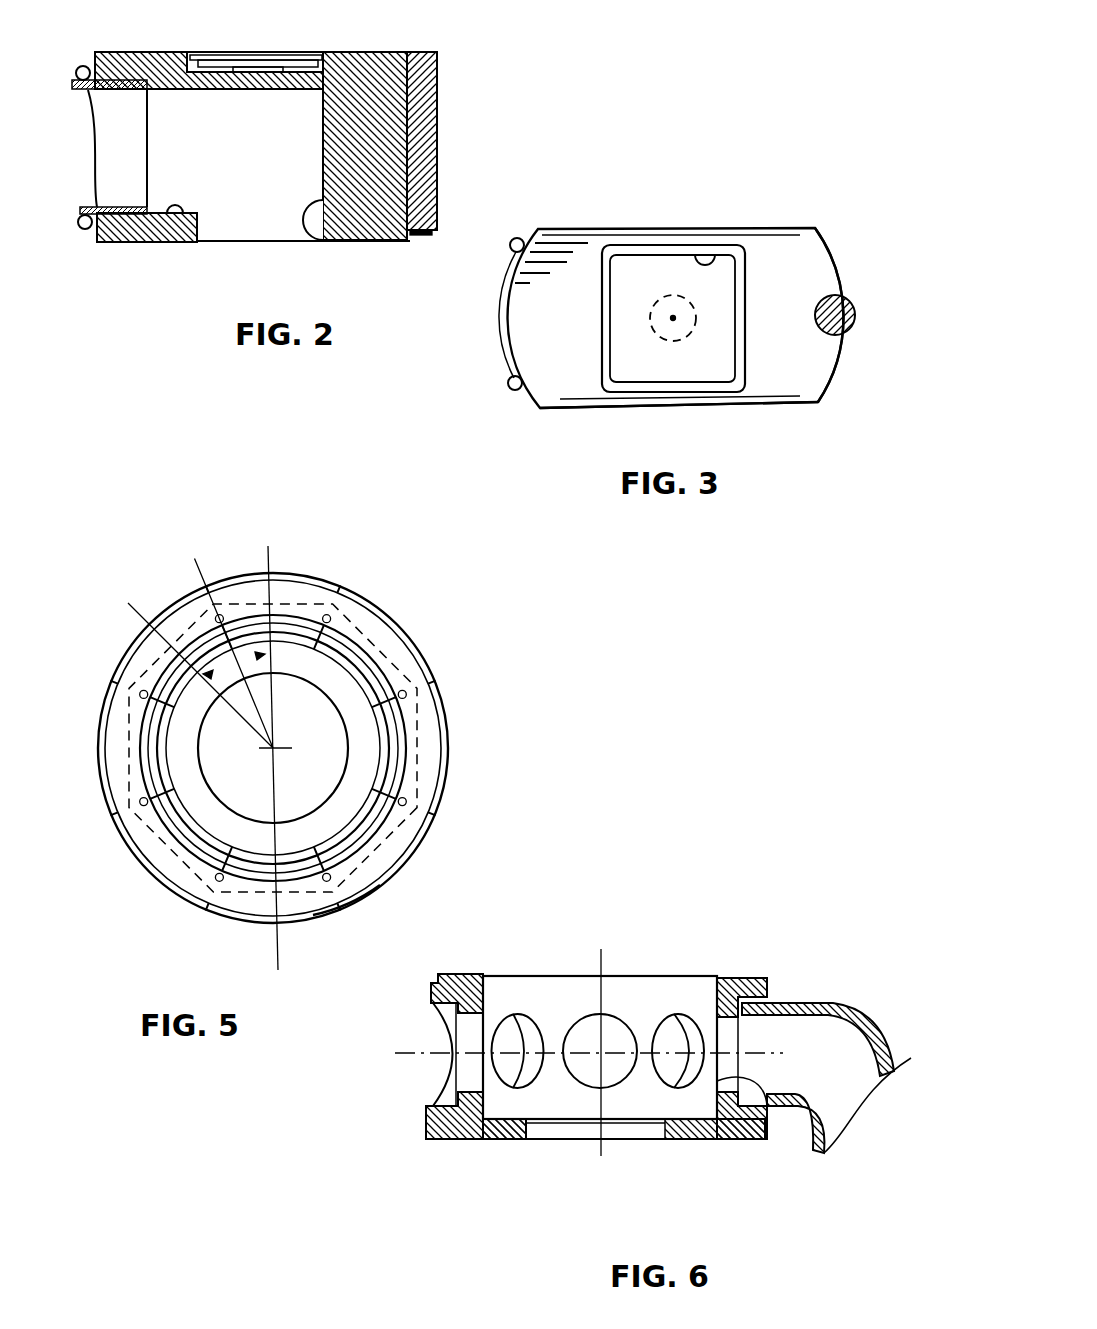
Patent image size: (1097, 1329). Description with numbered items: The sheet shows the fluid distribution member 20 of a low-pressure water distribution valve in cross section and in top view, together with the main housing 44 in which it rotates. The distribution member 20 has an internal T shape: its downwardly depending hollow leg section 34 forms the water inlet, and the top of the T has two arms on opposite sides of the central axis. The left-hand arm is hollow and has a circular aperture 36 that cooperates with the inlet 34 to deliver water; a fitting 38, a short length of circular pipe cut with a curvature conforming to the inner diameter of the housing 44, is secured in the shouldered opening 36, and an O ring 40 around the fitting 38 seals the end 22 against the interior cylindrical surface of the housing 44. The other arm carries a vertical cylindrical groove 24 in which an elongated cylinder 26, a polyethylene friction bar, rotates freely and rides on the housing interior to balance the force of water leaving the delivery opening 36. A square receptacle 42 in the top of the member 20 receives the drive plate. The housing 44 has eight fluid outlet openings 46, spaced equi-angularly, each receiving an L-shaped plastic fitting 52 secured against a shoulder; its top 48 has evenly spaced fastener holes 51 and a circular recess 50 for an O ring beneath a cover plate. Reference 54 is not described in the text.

In FIG. 2, the fluid distribution member 20 is at (352, 52).
In FIG. 3, the fluid distribution member 20 is at (784, 248).
In FIG. 3, the end 22 is at (540, 410).
In FIG. 2, the vertical cylindrical groove 24 is at (410, 52).
In FIG. 3, the vertical cylindrical groove 24 is at (792, 399).
In FIG. 2, the elongated cylinder 26 is at (437, 95).
In FIG. 3, the elongated cylinder 26 is at (843, 297).
In FIG. 2, the hollow leg section 34 is at (320, 240).
In FIG. 2, the circular aperture 36 is at (167, 243).
In FIG. 2, the fitting 38 is at (93, 188).
In FIG. 3, the fitting 38 is at (498, 348).
In FIG. 2, the O ring 40 is at (82, 229).
In FIG. 3, the O ring 40 is at (522, 238).
In FIG. 3, the square receptacle 42 is at (712, 260).
In FIG. 6, the main housing 44 is at (752, 978).
In FIG. 5, the fluid outlet openings 46 is at (380, 885).
In FIG. 6, the fluid outlet openings 46 is at (579, 1072).
In FIG. 5, the top 48 is at (112, 686).
In FIG. 6, the top 48 is at (452, 976).
In FIG. 5, the circular recess 50 is at (378, 667).
In FIG. 6, the circular recess 50 is at (486, 975).
In FIG. 5, the fastener holes 51 is at (146, 808).
In FIG. 6, the plastic fitting 52 is at (808, 1002).
In FIG. 6, the bottom plate 54 is at (640, 1142).